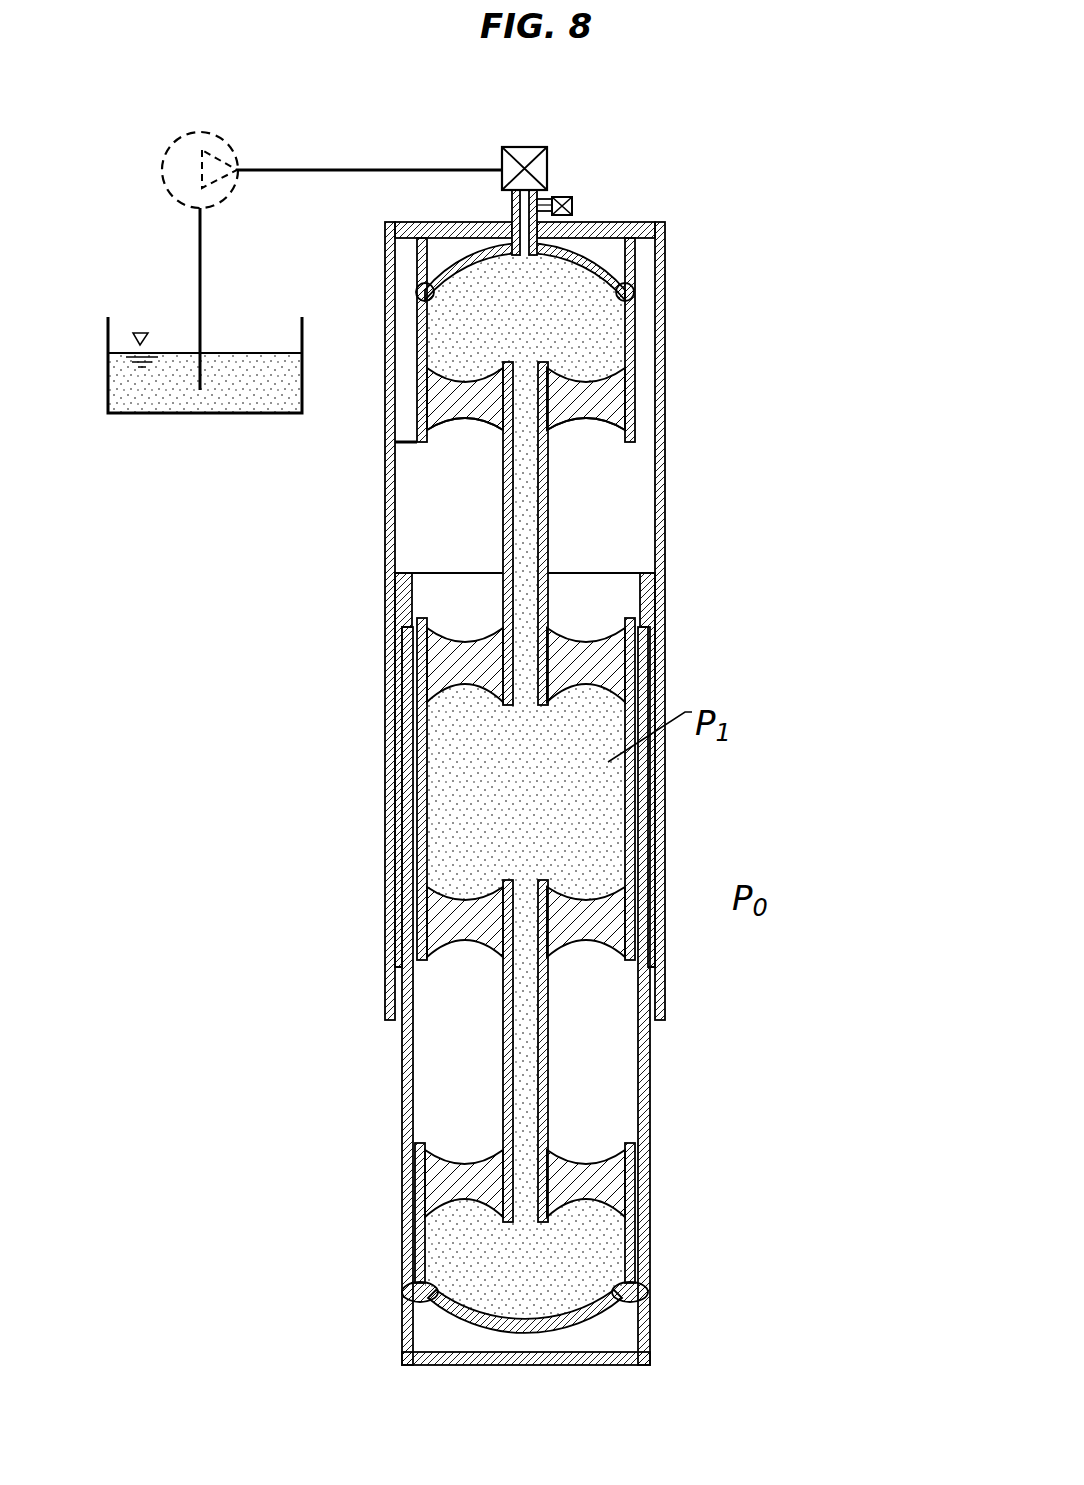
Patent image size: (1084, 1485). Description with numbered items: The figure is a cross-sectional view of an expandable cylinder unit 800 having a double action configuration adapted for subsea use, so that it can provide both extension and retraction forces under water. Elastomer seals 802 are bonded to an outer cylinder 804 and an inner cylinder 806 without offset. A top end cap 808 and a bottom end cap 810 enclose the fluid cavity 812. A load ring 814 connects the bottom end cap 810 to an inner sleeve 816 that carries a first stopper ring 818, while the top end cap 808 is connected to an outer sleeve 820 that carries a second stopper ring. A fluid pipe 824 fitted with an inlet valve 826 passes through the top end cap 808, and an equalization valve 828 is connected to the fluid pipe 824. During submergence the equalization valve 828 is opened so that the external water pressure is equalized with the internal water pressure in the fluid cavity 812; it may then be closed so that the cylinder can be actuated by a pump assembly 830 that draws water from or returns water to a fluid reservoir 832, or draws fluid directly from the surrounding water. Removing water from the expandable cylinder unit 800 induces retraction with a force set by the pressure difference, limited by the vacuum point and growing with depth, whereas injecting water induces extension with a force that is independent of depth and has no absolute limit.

The expandable cylinder unit 800 is at (627, 741).
The elastomer seals 802 is at (567, 423).
The outer cylinder 804 is at (635, 407).
The inner cylinder 806 is at (548, 523).
The top end cap 808 is at (595, 262).
The bottom end cap 810 is at (615, 1315).
The fluid cavity 812 is at (457, 758).
The load ring 814 is at (648, 1290).
The inner sleeve 816 is at (643, 1220).
The first stopper ring 818 is at (650, 598).
The outer sleeve 820 is at (665, 328).
The fluid pipe 824 is at (512, 212).
The inlet valve 826 is at (523, 155).
The equalization valve 828 is at (567, 193).
The pump assembly 830 is at (220, 192).
The fluid reservoir 832 is at (233, 405).